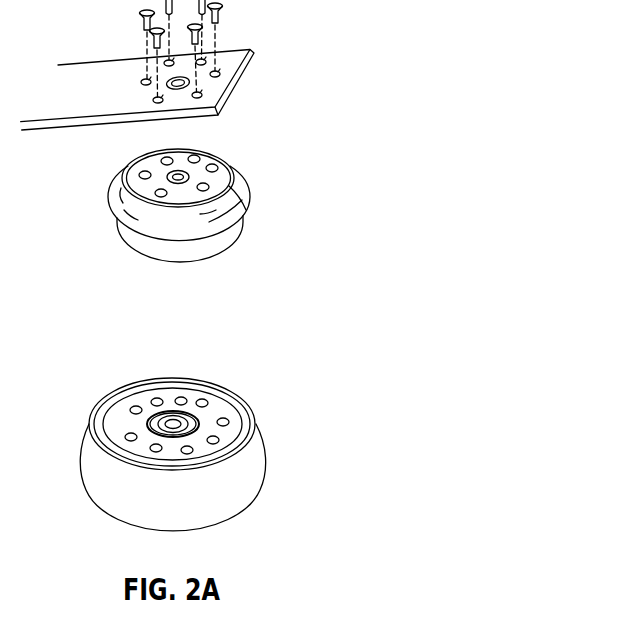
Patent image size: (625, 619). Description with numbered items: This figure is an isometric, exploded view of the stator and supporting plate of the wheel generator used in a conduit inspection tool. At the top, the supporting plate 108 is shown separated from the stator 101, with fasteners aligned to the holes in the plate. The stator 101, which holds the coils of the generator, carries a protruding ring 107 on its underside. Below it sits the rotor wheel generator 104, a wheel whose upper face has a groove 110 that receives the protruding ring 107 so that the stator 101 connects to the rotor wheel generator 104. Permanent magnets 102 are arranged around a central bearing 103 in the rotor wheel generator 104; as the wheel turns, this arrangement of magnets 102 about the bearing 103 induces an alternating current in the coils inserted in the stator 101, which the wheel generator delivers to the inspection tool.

The supporting plate 108 is at (235, 86).
The stator 101 is at (242, 196).
The protruding ring 107 is at (235, 238).
The rotor wheel generator 104 is at (248, 488).
The groove 110 is at (250, 422).
The permanent magnets 102 is at (207, 398).
The central bearing 103 is at (171, 410).